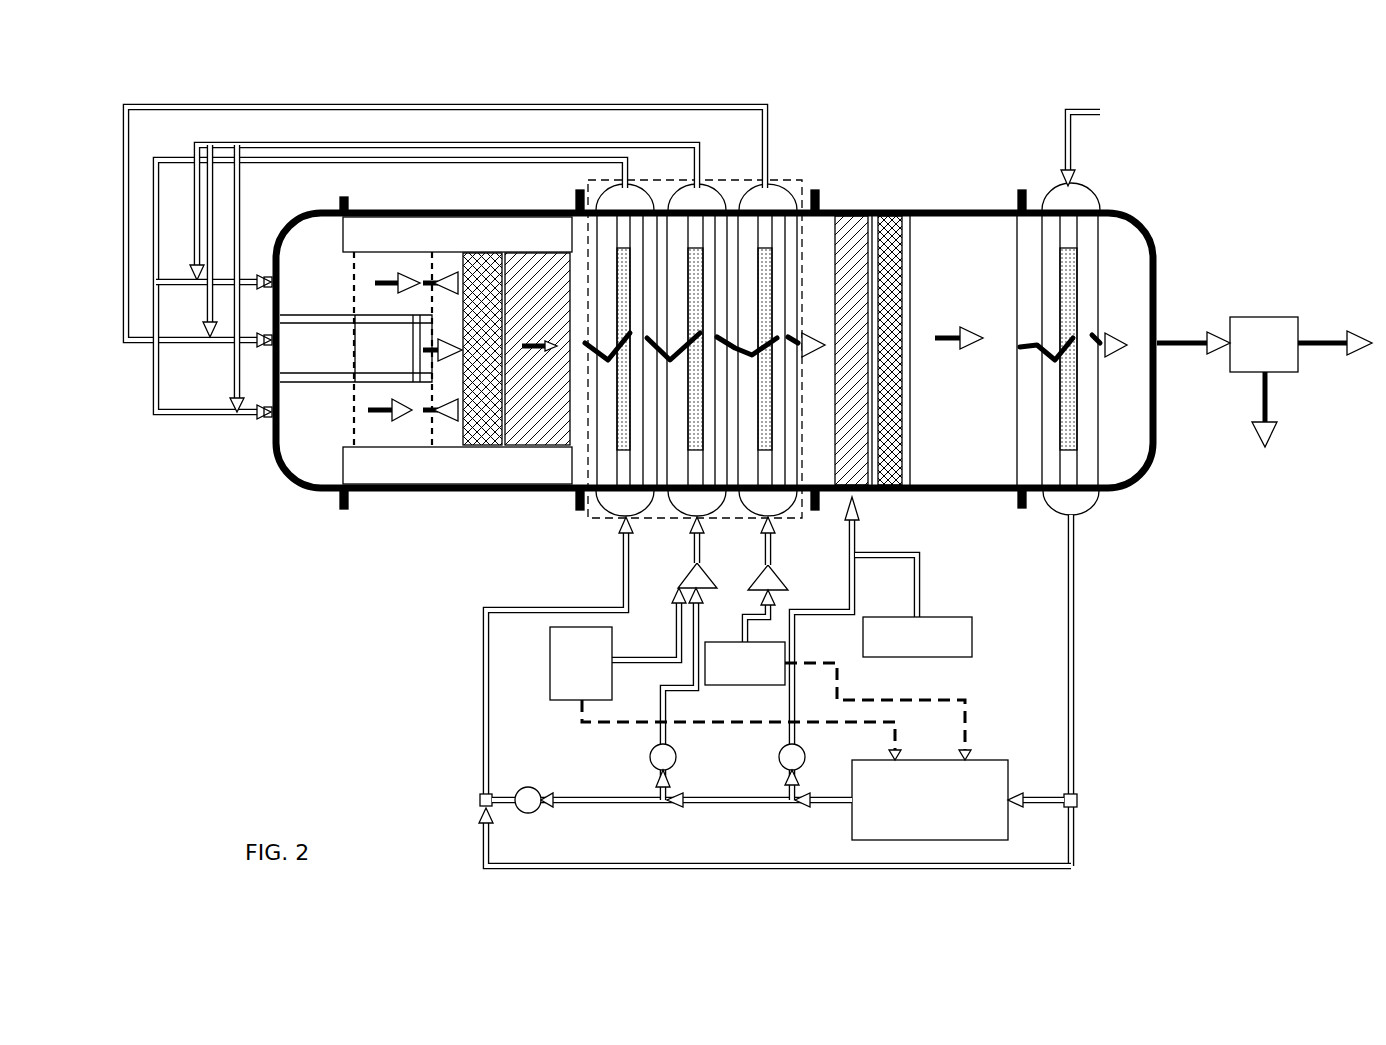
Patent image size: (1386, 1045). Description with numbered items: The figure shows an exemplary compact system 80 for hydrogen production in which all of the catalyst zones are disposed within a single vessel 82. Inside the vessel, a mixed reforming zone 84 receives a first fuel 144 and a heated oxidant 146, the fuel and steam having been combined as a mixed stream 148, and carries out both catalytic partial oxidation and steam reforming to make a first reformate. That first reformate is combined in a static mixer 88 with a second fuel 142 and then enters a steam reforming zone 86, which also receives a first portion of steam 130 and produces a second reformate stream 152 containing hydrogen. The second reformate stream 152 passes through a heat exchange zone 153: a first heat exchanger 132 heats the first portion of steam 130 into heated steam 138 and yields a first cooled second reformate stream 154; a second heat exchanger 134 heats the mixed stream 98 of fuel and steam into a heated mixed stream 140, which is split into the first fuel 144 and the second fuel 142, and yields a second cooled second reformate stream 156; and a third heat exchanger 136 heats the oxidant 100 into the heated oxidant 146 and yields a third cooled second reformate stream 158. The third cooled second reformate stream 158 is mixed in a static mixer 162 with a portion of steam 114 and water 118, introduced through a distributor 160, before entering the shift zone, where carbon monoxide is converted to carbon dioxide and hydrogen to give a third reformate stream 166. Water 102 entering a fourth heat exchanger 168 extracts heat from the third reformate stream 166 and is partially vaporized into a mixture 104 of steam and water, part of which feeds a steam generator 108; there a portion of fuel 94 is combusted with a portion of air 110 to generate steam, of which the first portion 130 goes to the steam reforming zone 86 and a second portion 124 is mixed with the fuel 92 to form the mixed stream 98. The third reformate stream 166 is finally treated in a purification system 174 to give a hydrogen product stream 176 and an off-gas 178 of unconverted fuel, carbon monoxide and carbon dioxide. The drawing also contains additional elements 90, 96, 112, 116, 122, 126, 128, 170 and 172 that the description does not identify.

The compact system 80 is at (146, 741).
The single vessel 82 is at (960, 210).
The mixed reforming zone 84 is at (372, 333).
The steam reforming zone 86 is at (550, 447).
The static mixer 88 is at (498, 252).
The reductant tank 90 is at (550, 665).
The fuel 92 is at (652, 658).
The portion of fuel 94 is at (588, 735).
The water tank 96 is at (760, 688).
The mixed stream 98 is at (690, 553).
The oxidant 100 is at (425, 365).
The water 102 is at (1085, 110).
The mixture of steam and water 104 is at (1076, 655).
The steam generator 108 is at (992, 752).
The portion of air 110 is at (843, 690).
The line 112 is at (817, 805).
The portion of steam 114 is at (797, 633).
The sensor 116 is at (975, 640).
The water 118 is at (920, 560).
The line 122 is at (738, 805).
The second portion of steam 124 is at (655, 720).
The pump line 126 is at (608, 805).
The return line 128 is at (586, 868).
The first portion of steam 130 is at (483, 700).
The first heat exchanger 132 is at (645, 200).
The second heat exchanger 134 is at (715, 200).
The third heat exchanger 136 is at (785, 200).
The heated steam 138 is at (480, 158).
The heated mixed stream 140 is at (346, 143).
The second fuel 142 is at (195, 152).
The first fuel 144 is at (208, 292).
The heated oxidant 146 is at (250, 104).
The mixed stream 148 is at (250, 343).
The second reformate stream 152 is at (577, 233).
The heat exchange zone 153 is at (612, 530).
The first cooled second reformate stream 154 is at (667, 362).
The second cooled second reformate stream 156 is at (732, 348).
The third cooled second reformate stream 158 is at (815, 338).
The distributor 160 is at (862, 488).
The static mixer 162 is at (898, 210).
The third reformate stream 166 is at (1032, 335).
The fourth heat exchanger 168 is at (1080, 200).
The outlet valve 170 is at (1108, 336).
The outlet pipe 172 is at (1172, 348).
The purification system 174 is at (378, 230).
The hydrogen product stream 176 is at (1323, 340).
The off-gas 178 is at (1270, 397).